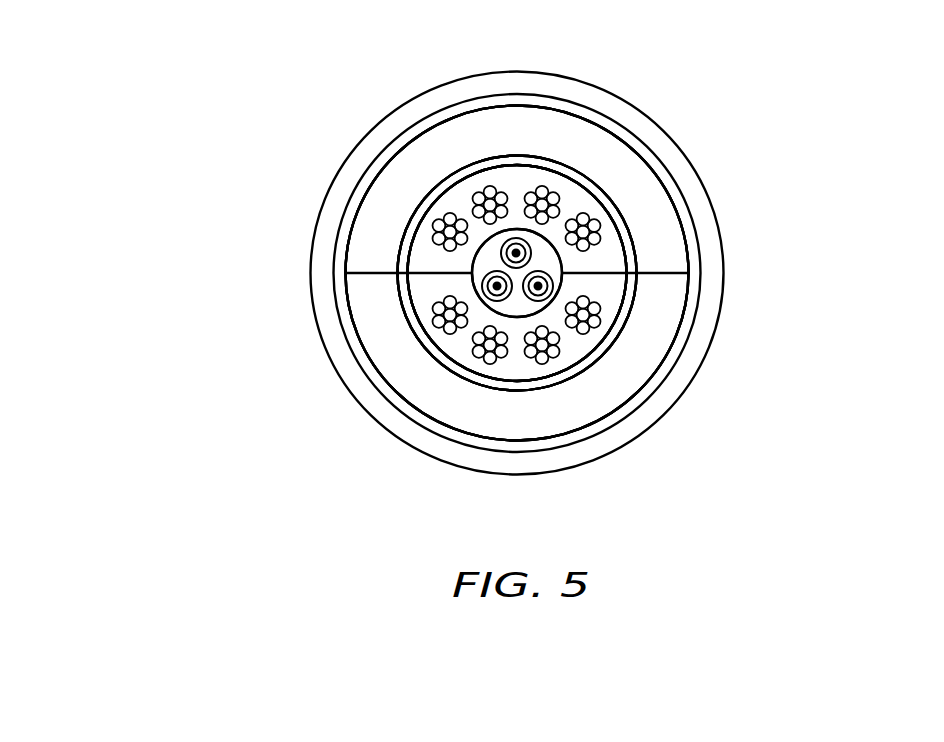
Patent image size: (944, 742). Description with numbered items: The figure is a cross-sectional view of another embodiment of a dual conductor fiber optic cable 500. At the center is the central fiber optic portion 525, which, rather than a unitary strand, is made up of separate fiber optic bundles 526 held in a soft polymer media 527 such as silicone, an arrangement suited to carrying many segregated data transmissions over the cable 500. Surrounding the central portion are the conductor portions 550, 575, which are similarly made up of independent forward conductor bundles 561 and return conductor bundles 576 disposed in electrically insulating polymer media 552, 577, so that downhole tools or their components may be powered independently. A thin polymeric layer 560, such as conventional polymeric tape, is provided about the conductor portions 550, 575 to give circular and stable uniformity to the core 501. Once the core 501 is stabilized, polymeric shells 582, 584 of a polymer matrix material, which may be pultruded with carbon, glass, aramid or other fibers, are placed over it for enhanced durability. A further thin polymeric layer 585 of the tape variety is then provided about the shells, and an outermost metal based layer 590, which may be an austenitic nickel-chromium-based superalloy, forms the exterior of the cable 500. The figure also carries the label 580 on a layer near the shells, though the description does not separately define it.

The dual conductor fiber optic cable 500 is at (163, 97).
The core 501 is at (480, 391).
The central fiber optic portion 525 is at (463, 265).
The fiber optic bundles 526 is at (552, 287).
The soft polymer media 527 is at (553, 260).
The conductor portion 550 is at (581, 179).
The electrically insulating polymer media 552 is at (457, 195).
The thin polymeric layer 560 is at (423, 207).
The forward conductor bundles 561 is at (488, 200).
The conductor portion 575 is at (452, 365).
The return conductor bundles 576 is at (545, 357).
The electrically insulating polymer media 577 is at (425, 305).
The armor layer 580 is at (358, 201).
The polymeric shell 582 is at (655, 343).
The polymeric shell 584 is at (545, 125).
The thin polymeric layer 585 is at (390, 397).
The outermost metal based layer 590 is at (407, 112).